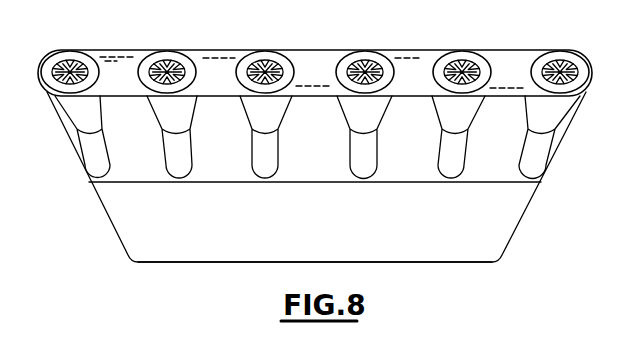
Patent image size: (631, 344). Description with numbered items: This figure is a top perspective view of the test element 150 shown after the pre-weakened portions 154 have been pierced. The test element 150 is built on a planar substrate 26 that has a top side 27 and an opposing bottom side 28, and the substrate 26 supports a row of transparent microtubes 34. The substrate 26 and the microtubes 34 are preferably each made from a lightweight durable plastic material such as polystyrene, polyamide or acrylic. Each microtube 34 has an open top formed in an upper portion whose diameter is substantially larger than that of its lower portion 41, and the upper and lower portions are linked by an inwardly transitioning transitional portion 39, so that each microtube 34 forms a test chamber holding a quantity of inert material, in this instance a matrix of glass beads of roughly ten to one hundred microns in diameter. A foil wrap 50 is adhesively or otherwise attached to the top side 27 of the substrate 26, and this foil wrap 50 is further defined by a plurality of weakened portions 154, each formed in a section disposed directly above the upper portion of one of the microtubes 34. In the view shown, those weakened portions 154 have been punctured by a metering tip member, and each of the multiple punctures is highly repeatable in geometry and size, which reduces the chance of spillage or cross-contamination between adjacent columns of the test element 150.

The test element 150 is at (330, 153).
The planar substrate 26 is at (115, 218).
The bottom side 28 is at (445, 263).
The transitional portion 39 is at (562, 107).
The foil wrap 50 is at (413, 52).
The top side 27 is at (220, 55).
The weakened portions 154 is at (155, 62).
The lower portion 41 is at (162, 170).
The transparent microtubes 34 is at (525, 148).